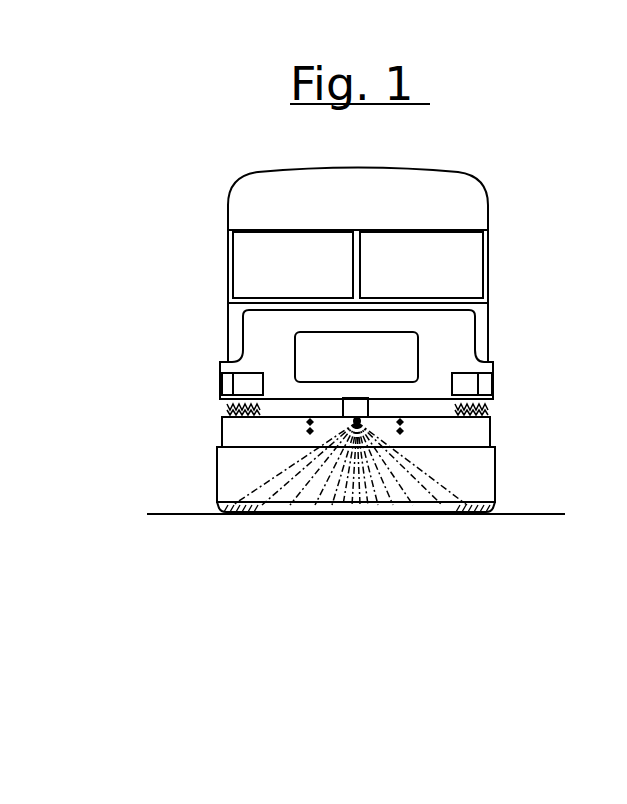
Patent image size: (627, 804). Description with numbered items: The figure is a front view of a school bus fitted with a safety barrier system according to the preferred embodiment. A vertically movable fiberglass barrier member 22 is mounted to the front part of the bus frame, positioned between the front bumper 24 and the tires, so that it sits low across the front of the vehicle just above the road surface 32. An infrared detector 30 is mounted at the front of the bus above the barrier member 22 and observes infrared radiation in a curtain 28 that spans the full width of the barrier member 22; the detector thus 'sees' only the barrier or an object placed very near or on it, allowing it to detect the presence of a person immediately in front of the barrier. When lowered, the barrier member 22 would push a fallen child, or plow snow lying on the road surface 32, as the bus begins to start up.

The front barrier member 22 is at (227, 467).
The front bumper 24 is at (228, 433).
The curtain 28 is at (417, 460).
The infrared detector 30 is at (366, 406).
The road surface 32 is at (510, 513).